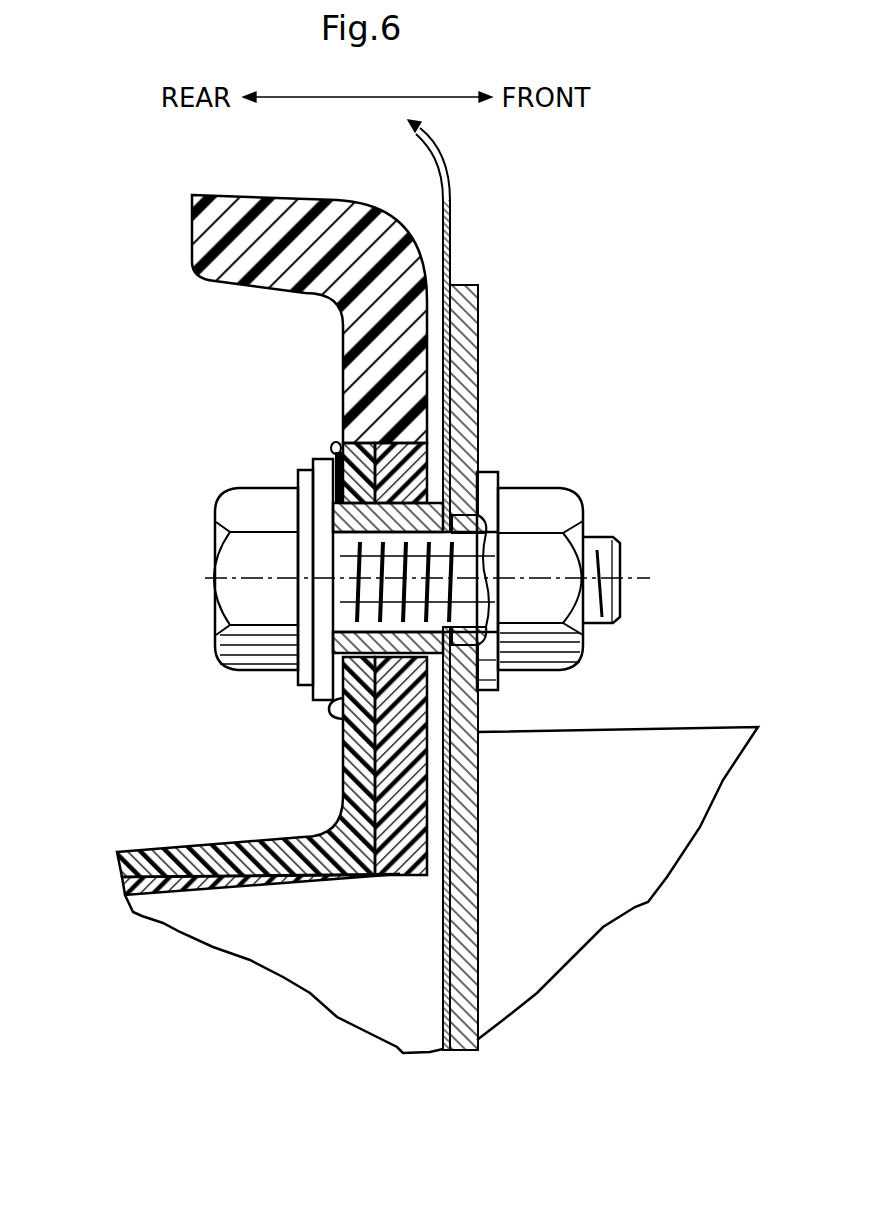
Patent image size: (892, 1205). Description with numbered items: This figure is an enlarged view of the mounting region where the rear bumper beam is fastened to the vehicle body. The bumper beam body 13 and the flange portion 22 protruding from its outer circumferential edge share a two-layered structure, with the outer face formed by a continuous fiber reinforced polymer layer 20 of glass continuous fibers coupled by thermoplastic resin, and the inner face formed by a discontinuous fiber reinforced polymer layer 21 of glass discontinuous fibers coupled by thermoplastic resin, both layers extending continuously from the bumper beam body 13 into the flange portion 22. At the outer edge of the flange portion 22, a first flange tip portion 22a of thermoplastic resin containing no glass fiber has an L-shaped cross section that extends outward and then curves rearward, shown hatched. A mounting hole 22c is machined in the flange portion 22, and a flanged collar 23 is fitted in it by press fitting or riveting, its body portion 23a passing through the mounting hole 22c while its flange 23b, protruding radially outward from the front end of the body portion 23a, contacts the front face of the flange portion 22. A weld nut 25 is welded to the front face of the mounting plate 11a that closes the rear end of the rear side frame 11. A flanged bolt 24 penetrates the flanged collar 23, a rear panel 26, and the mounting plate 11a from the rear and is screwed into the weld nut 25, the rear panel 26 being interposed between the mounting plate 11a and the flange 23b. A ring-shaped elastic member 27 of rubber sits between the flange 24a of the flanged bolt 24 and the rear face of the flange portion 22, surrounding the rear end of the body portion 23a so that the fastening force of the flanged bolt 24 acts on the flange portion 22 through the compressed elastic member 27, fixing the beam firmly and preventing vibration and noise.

The rear side frame 11 is at (441, 661).
The mounting plate 11a is at (473, 342).
The bumper beam body 13 is at (242, 810).
The continuous fiber reinforced polymer layer 20 is at (255, 850).
The discontinuous fiber reinforced polymer layer 21 is at (303, 878).
The flange portion 22 is at (320, 755).
The first flange tip portion 22a is at (303, 212).
The mounting hole 22c is at (332, 636).
The flanged collar 23 is at (346, 539).
The body portion 23a is at (360, 530).
The flange 23b is at (447, 512).
The flanged bolt 24 is at (249, 539).
The flange 24a is at (314, 513).
The weld nut 25 is at (532, 495).
The rear panel 26 is at (453, 229).
The elastic member 27 is at (338, 440).